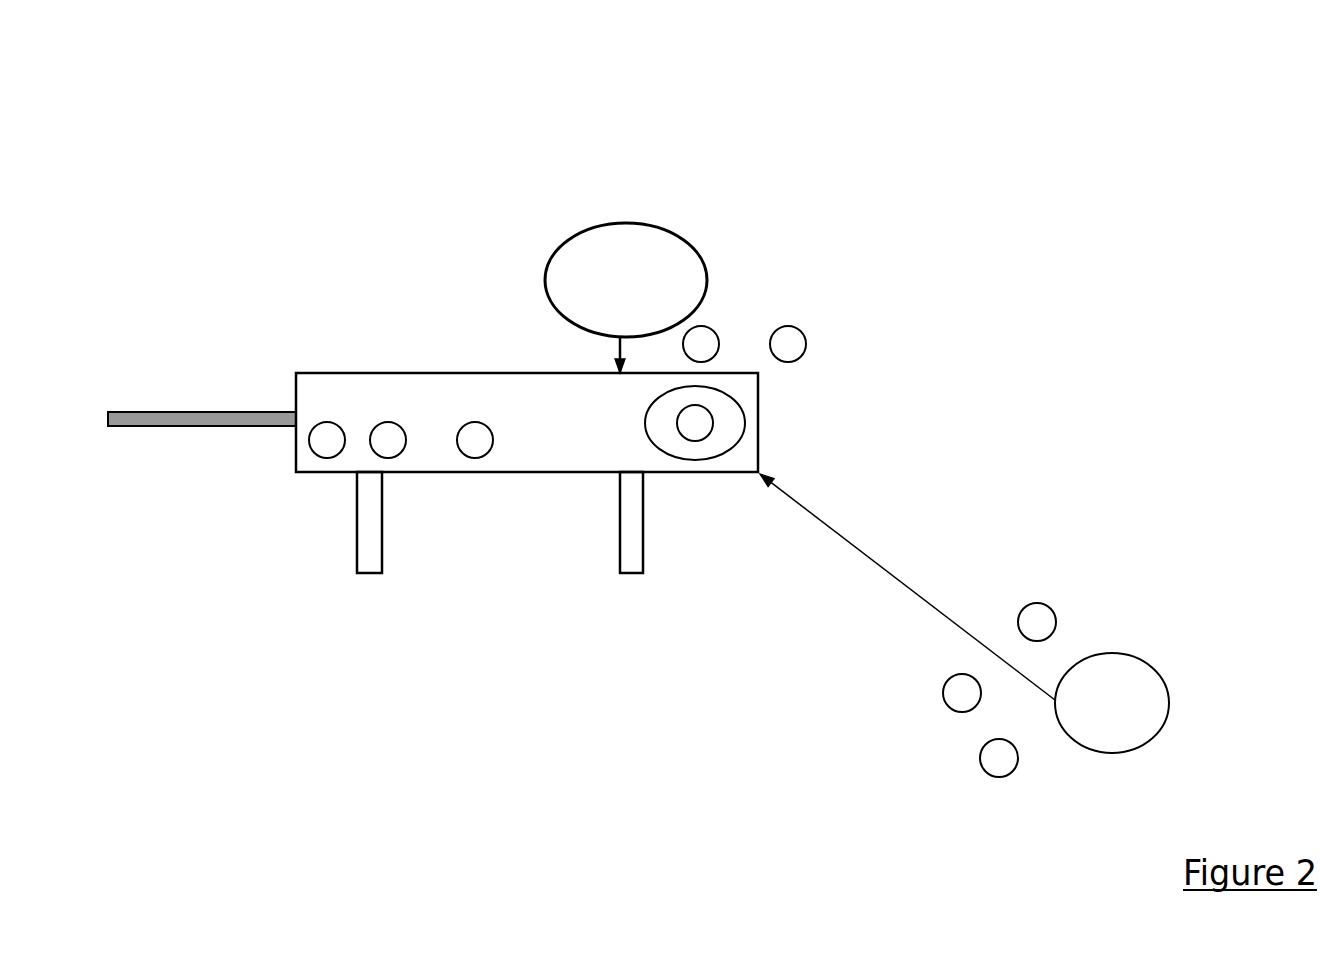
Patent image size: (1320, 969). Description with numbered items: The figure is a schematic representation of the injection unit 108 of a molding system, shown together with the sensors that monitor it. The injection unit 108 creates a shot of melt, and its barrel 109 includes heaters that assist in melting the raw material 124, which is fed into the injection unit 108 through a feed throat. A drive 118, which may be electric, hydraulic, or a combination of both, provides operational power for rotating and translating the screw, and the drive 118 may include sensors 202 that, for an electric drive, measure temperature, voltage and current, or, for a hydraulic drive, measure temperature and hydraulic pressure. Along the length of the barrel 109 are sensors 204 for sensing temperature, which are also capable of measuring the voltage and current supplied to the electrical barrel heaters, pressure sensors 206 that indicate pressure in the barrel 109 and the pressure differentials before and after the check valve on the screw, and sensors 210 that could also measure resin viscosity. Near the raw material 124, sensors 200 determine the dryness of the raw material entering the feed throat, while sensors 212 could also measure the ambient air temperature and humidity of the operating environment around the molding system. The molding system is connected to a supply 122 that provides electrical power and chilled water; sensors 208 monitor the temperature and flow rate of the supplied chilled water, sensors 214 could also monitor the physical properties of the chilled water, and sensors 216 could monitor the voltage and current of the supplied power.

The injection unit 108 is at (433, 303).
The barrel 109 is at (432, 373).
The raw material 124 is at (682, 237).
The sensors 200 is at (717, 330).
The sensors 212 is at (803, 330).
The drive 118 is at (745, 412).
The sensors 202 is at (705, 440).
The pressure sensors 206 is at (333, 457).
The sensors 204 is at (395, 457).
The sensors 210 is at (477, 460).
The sensors 208 is at (1031, 602).
The sensors 214 is at (947, 677).
The sensors 216 is at (983, 738).
The supply 122 is at (1085, 743).